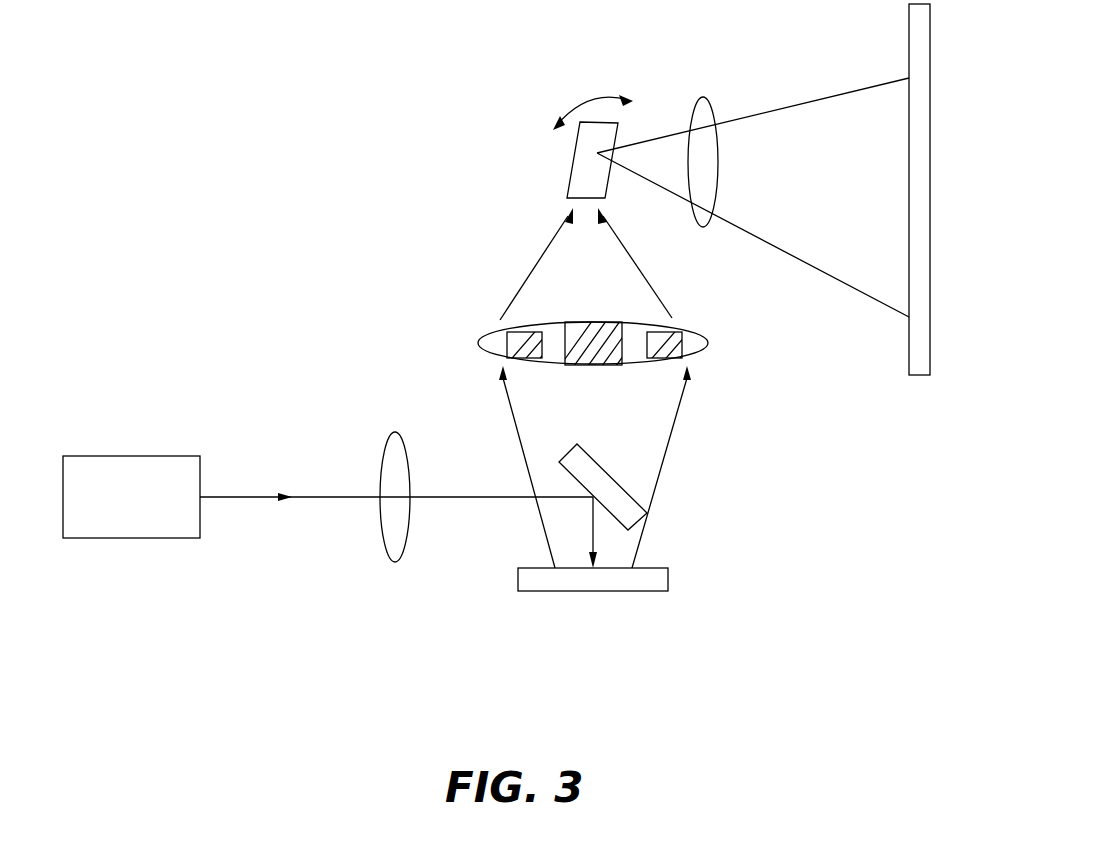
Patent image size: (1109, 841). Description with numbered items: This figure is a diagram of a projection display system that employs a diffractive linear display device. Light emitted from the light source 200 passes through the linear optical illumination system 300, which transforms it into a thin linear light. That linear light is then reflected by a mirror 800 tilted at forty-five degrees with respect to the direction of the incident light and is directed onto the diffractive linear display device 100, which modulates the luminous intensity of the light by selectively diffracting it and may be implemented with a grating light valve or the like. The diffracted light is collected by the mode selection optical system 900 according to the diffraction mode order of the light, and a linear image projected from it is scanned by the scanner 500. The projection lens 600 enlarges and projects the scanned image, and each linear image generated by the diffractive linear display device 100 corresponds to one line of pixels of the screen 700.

The diffractive linear display device 100 is at (603, 591).
The light source 200 is at (131, 474).
The linear optical illumination system 300 is at (398, 537).
The scanner 500 is at (575, 164).
The projection lens 600 is at (712, 163).
The screen 700 is at (918, 376).
The mirror 800 is at (601, 478).
The mode selection optical system 900 is at (488, 337).